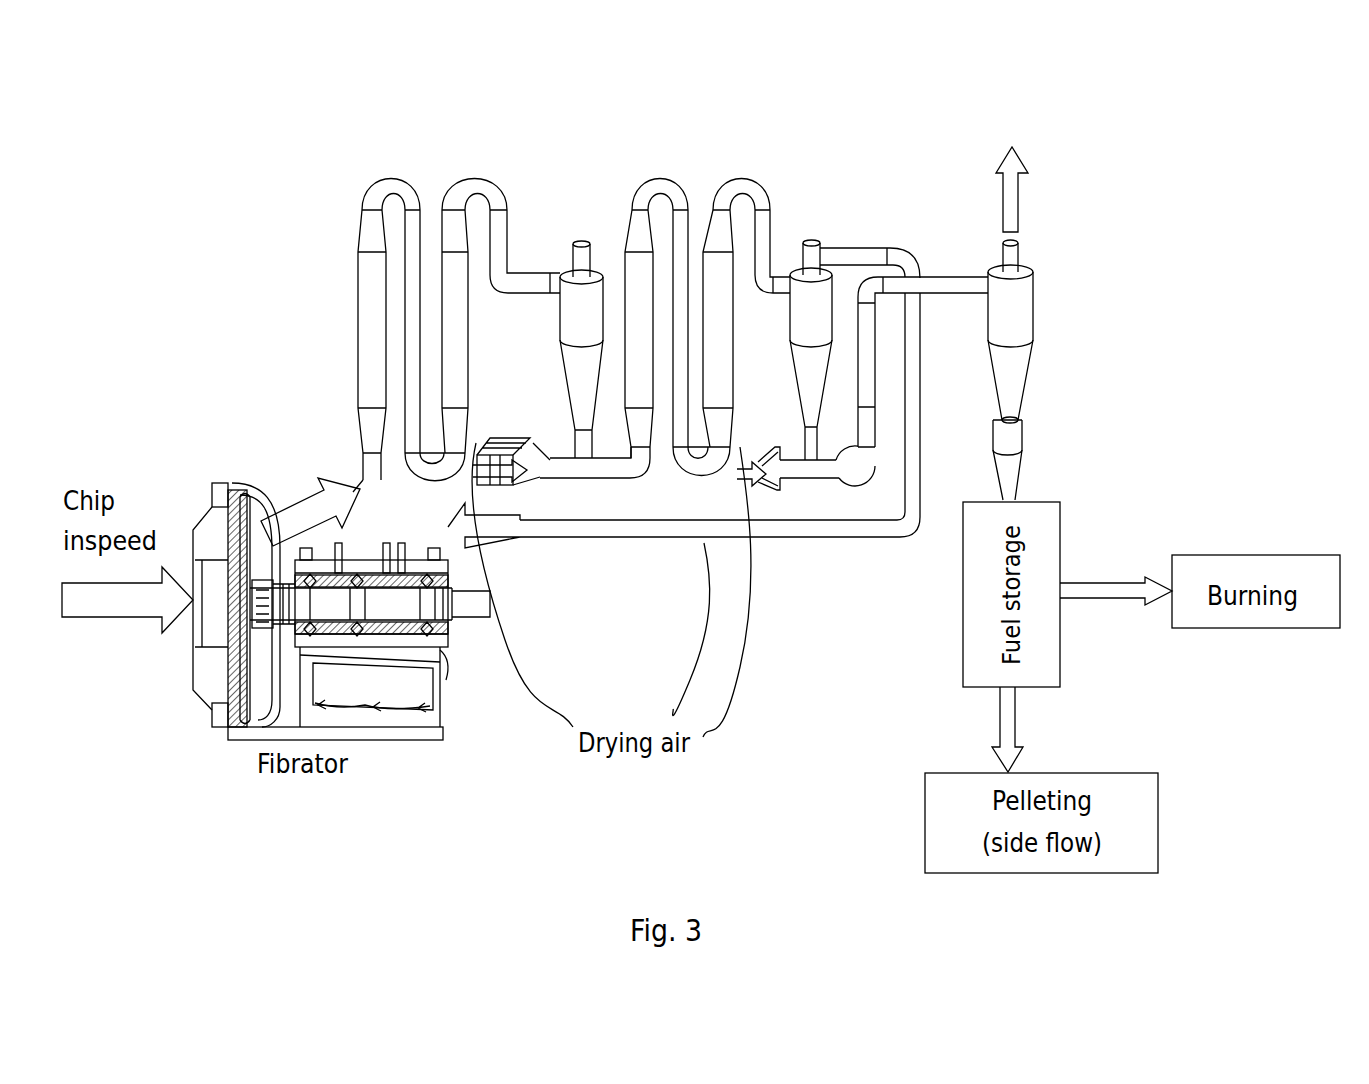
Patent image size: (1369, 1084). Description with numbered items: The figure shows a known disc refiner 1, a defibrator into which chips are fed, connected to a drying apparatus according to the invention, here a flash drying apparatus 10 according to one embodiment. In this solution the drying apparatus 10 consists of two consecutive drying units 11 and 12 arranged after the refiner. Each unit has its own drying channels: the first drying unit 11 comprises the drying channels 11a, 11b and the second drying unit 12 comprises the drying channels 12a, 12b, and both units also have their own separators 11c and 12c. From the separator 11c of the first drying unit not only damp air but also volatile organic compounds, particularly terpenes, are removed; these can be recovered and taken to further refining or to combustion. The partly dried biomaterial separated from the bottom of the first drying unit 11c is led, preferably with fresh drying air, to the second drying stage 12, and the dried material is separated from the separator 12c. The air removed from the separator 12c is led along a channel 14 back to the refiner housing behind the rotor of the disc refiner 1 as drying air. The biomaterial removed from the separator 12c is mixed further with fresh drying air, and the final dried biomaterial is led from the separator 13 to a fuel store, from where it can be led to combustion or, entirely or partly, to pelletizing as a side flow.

The disc refiner 1 is at (192, 710).
The flash drying apparatus 10 is at (293, 137).
The first drying unit 11 is at (434, 197).
The drying channel 11a is at (368, 302).
The drying channel 11b is at (455, 355).
The separator 11c is at (582, 390).
The second drying unit 12 is at (693, 188).
The drying channel 12a is at (637, 292).
The drying channel 12b is at (717, 290).
The separator 12c is at (820, 305).
The separator 13 is at (1015, 368).
The channel 14 is at (620, 527).